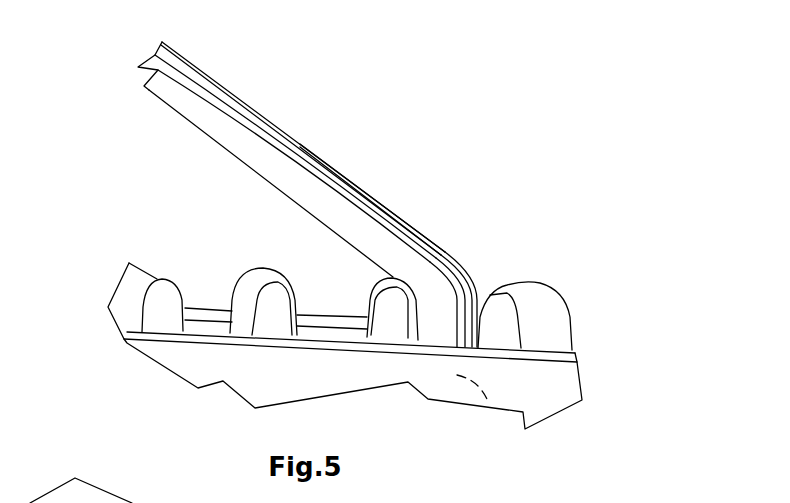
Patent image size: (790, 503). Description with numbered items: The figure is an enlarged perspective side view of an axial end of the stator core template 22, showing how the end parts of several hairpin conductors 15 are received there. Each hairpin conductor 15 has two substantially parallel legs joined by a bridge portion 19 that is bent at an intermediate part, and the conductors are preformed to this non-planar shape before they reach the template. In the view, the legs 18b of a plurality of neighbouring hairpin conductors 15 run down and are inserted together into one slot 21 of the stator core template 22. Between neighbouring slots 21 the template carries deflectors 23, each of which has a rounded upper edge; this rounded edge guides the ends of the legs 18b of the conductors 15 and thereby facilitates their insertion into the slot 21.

The bridge portion 19 is at (220, 120).
The hairpin conductor 15 is at (337, 207).
The leg 18b is at (445, 292).
The stator core template 22 is at (548, 385).
The deflector 23 is at (160, 308).
The slot 21 is at (488, 402).